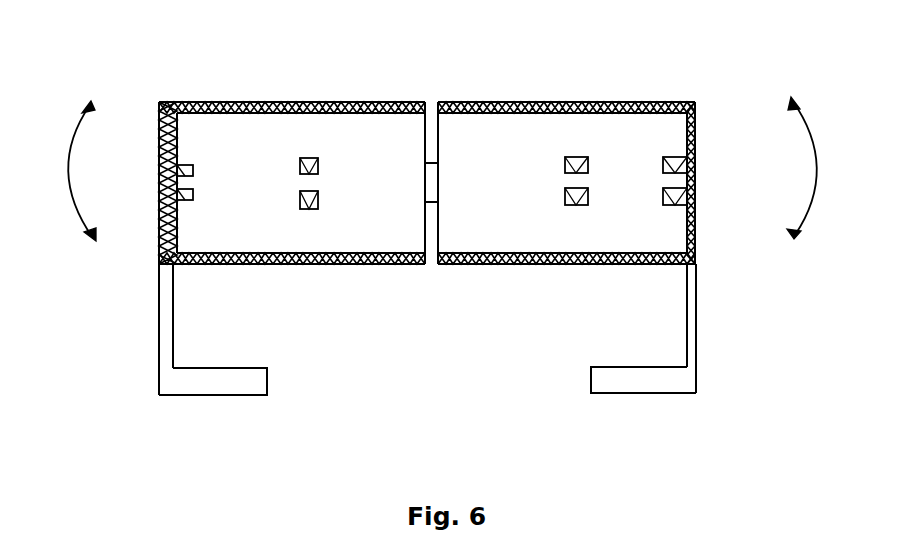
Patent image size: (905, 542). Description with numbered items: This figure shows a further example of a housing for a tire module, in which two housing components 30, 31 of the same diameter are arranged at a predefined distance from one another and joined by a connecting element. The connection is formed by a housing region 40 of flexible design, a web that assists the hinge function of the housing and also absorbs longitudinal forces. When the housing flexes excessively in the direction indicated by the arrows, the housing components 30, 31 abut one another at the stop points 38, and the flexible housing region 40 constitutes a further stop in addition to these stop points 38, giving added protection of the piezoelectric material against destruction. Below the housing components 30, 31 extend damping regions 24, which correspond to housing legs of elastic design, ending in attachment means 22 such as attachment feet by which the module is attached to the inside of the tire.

The attachment means 22 is at (212, 382).
The damping regions 24 is at (173, 317).
The housing component 30 is at (363, 102).
The housing component 31 is at (517, 102).
The stop points 38 is at (432, 107).
The flexible housing region 40 is at (430, 182).